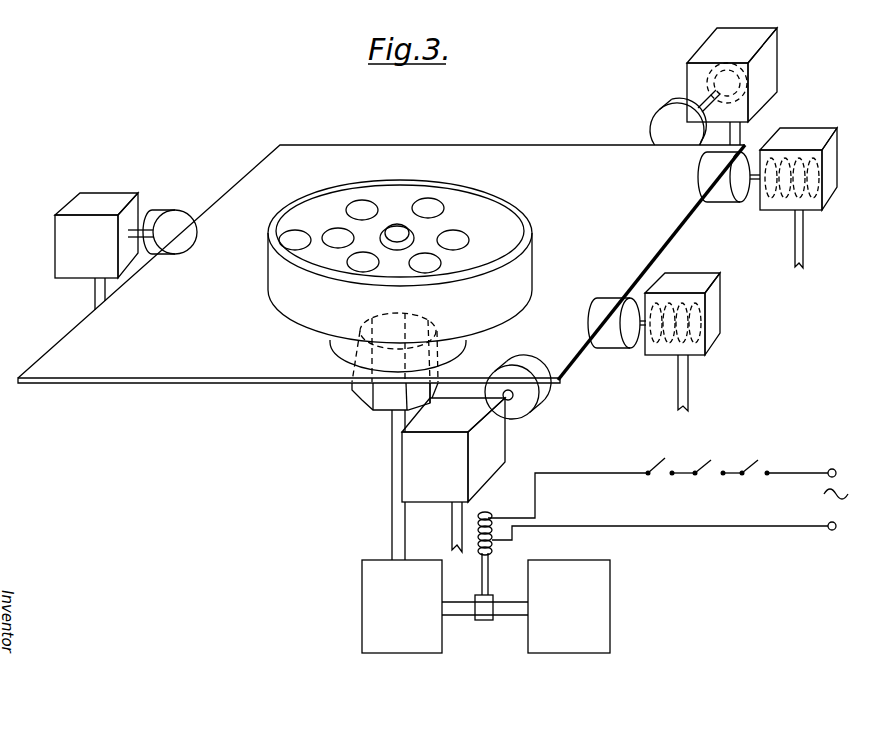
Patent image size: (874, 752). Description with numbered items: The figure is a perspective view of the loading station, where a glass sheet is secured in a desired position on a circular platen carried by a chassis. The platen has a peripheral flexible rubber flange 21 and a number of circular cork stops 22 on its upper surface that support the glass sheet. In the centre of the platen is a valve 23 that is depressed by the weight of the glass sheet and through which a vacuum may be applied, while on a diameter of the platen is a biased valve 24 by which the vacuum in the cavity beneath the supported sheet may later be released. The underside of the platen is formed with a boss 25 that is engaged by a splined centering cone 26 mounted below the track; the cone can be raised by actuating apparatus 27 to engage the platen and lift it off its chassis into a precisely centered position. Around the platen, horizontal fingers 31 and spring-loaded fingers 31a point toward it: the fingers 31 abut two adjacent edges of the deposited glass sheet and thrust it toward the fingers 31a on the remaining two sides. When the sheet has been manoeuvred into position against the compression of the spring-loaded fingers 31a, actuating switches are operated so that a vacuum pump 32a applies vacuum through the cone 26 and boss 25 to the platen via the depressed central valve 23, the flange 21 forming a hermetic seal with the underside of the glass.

The peripheral flexible rubber flange 21 is at (268, 238).
The circular cork stops 22 is at (364, 210).
The valve 23 is at (410, 236).
The biased valve 24 is at (293, 240).
The boss 25 is at (452, 347).
The splined centering cone 26 is at (432, 400).
The actuating apparatus 27 is at (372, 613).
The horizontal fingers 31 is at (160, 223).
The spring-loaded fingers 31a is at (675, 116).
The vacuum pump 32a is at (585, 597).